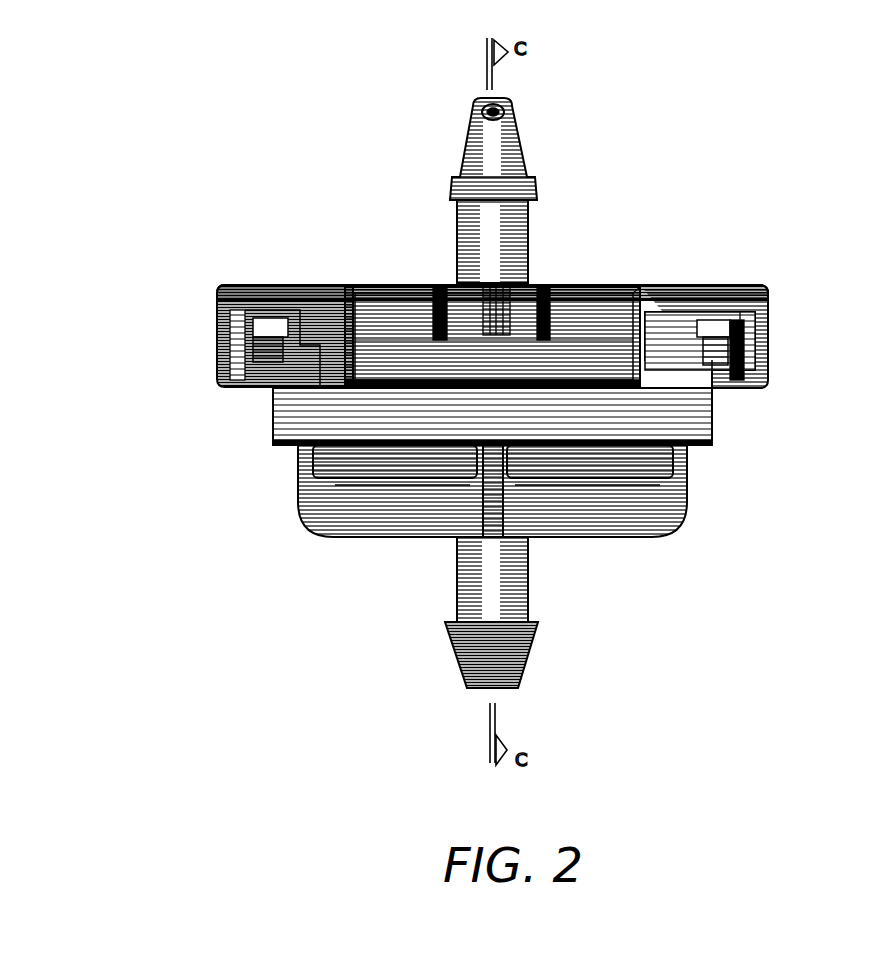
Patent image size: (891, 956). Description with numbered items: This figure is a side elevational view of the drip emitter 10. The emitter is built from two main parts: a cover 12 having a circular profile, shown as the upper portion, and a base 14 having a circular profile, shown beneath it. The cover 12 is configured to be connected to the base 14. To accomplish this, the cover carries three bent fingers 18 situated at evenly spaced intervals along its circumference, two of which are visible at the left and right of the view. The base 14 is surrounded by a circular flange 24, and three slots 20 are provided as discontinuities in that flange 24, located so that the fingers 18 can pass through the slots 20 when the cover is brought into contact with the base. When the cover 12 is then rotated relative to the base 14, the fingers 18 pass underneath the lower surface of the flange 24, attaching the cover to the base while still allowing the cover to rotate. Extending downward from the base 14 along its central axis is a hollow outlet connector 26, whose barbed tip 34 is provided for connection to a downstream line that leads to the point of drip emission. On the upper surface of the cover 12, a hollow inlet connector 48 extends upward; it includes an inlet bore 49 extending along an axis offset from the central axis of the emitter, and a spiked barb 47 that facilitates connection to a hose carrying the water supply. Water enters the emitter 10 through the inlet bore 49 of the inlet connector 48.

The drip emitter 10 is at (632, 185).
The cover 12 is at (600, 294).
The base 14 is at (688, 423).
The bent fingers 18 is at (226, 360).
The slots 20 is at (687, 350).
The circular flange 24 is at (270, 353).
The hollow outlet connector 26 is at (485, 573).
The barbed tip 34 is at (527, 632).
The spiked barb 47 is at (510, 152).
The hollow inlet connector 48 is at (482, 232).
The inlet bore 49 is at (500, 105).